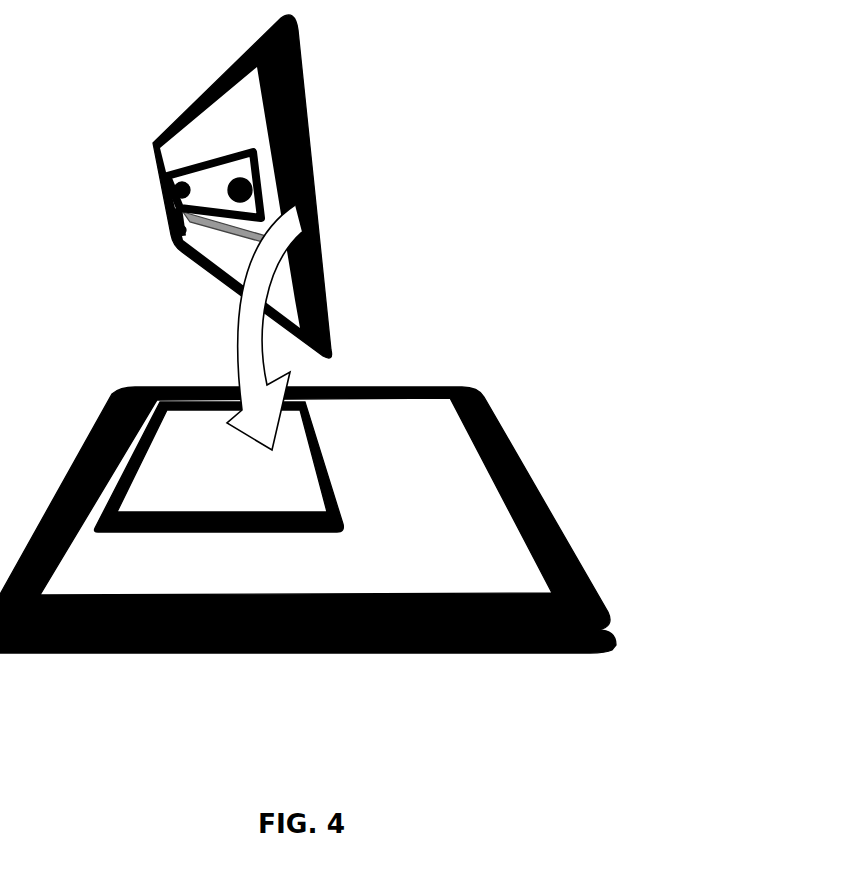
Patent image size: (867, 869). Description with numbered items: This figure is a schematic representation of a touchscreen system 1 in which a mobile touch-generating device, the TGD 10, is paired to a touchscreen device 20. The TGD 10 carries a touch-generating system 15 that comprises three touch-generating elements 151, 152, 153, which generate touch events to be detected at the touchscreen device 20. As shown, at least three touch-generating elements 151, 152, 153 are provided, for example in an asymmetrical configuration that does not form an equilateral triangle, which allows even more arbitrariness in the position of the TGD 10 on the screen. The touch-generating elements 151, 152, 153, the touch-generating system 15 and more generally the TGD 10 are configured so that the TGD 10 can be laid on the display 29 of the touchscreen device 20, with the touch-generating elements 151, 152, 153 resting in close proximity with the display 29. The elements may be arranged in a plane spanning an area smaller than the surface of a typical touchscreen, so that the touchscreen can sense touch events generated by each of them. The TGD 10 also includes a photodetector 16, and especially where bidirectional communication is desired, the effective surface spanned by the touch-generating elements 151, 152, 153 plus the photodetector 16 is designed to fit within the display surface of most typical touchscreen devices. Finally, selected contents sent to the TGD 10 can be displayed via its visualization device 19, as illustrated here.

The touchscreen system 1 is at (602, 332).
The TGD 10 is at (307, 438).
The touch-generating system 15 is at (197, 160).
The touch-generating element 151 is at (253, 188).
The touch-generating element 152 is at (176, 193).
The touch-generating element 153 is at (183, 240).
The photodetector 16 is at (240, 250).
The visualization device 19 is at (163, 478).
The touchscreen device 20 is at (433, 627).
The display 29 is at (515, 587).